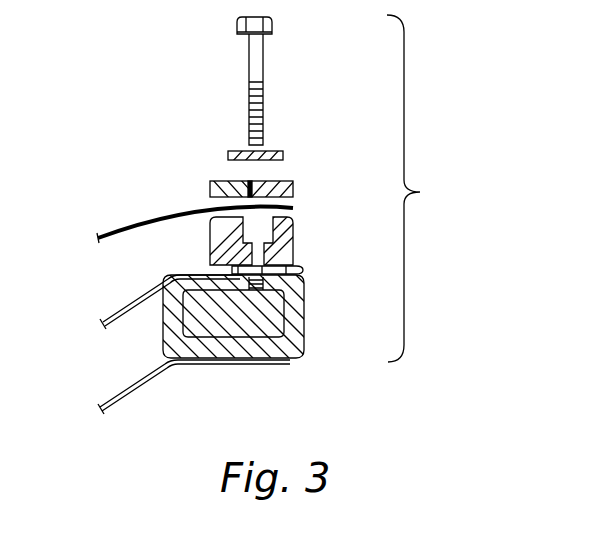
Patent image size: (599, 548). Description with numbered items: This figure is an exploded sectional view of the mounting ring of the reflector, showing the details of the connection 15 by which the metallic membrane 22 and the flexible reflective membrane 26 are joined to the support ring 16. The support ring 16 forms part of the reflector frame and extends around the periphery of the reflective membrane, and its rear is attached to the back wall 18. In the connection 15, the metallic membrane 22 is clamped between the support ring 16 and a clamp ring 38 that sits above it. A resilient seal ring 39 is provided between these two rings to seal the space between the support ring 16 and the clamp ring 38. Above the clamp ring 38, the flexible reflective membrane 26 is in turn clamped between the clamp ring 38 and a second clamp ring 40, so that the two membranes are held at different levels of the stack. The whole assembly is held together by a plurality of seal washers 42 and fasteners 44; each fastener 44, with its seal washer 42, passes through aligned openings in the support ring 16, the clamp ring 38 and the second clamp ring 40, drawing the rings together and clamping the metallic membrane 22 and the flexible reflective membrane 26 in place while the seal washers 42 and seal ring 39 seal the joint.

The connection 15 is at (437, 185).
The support ring 16 is at (218, 352).
The back wall 18 is at (130, 393).
The metallic membrane 22 is at (120, 315).
The flexible reflective membrane 26 is at (140, 223).
The clamp ring 38 is at (290, 246).
The resilient seal ring 39 is at (300, 272).
The second clamp ring 40 is at (303, 180).
The seal washers 42 is at (275, 150).
The fasteners 44 is at (260, 70).